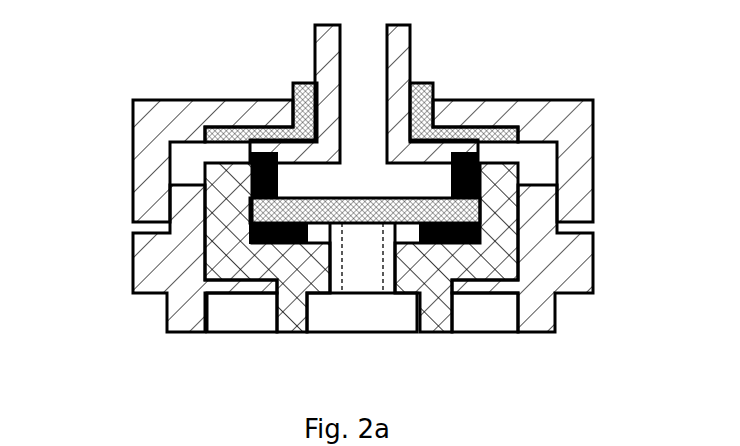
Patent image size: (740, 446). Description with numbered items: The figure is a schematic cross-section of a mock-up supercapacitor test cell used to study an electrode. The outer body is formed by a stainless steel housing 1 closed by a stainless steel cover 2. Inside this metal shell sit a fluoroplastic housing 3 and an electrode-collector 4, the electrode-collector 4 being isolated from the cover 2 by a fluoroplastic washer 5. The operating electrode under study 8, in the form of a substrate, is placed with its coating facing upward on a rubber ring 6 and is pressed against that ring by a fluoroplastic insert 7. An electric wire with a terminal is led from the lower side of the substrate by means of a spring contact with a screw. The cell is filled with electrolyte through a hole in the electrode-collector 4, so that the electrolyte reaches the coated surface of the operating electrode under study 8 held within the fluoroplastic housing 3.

The housing 1 is at (195, 310).
The cover 2 is at (155, 118).
The fluoroplastic housing 3 is at (290, 310).
The electrode-collector 4 is at (400, 82).
The fluoroplastic washer 5 is at (450, 135).
The rubber ring 6 is at (505, 312).
The fluoroplastic insert 7 is at (482, 176).
The operating electrode under study 8 is at (312, 192).